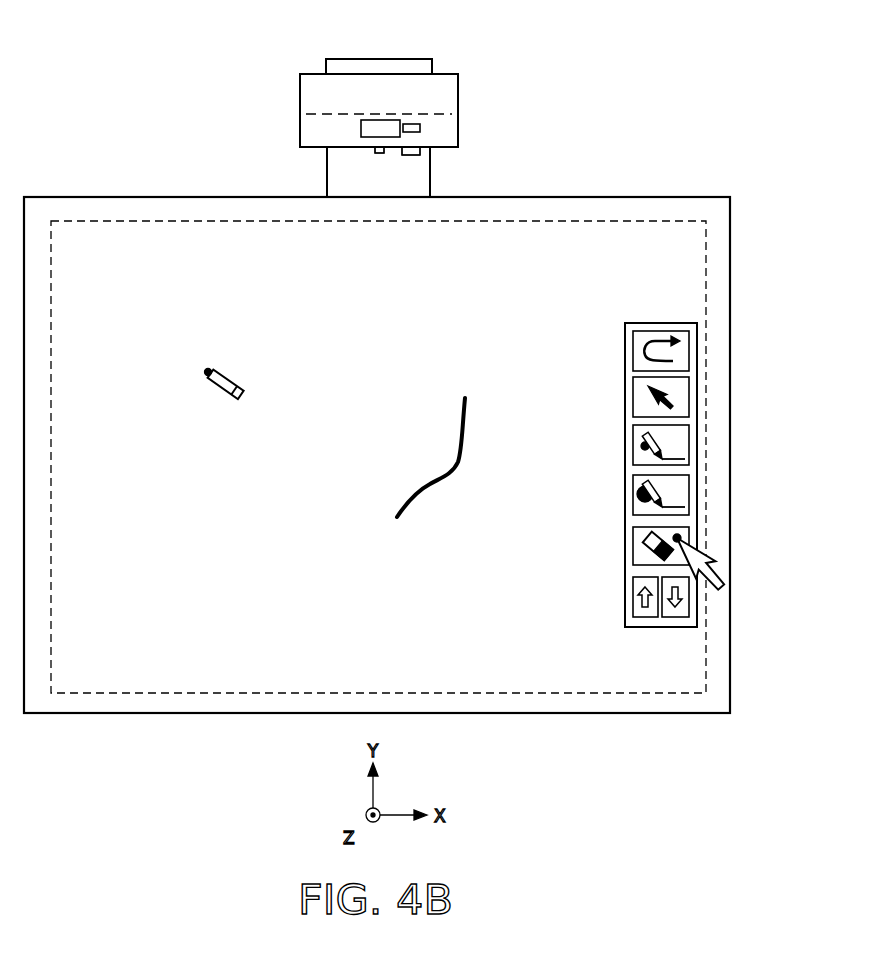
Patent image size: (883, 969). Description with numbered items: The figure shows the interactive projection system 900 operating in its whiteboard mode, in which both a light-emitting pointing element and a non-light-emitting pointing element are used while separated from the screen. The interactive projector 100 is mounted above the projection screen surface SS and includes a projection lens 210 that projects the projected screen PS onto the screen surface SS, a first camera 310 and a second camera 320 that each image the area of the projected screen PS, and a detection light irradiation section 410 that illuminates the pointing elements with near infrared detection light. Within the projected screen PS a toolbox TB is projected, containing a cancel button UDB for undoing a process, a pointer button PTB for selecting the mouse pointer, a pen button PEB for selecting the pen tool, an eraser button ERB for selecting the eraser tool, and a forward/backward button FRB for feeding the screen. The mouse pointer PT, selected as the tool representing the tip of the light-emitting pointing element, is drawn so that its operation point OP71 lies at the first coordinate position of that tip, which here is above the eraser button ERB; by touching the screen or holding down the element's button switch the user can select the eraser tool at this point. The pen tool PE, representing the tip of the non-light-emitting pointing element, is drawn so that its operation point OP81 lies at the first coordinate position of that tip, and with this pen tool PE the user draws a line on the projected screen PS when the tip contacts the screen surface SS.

The interactive projector 100 is at (458, 93).
The projection lens 210 is at (361, 130).
The first camera 310 is at (420, 128).
The second camera 320 is at (430, 152).
The detection light irradiation section 410 is at (357, 150).
The interactive projection system 900 is at (703, 92).
The projection screen surface SS is at (90, 203).
The projected screen PS is at (173, 222).
The toolbox TB is at (642, 323).
The cancel button UDB is at (633, 348).
The pointer button PTB is at (633, 392).
The pen button PEB is at (633, 445).
The eraser button ERB is at (633, 537).
The forward/backward button FRB is at (665, 586).
The pen tool PE is at (238, 382).
The mouse pointer PT is at (727, 578).
The operation point of the pen tool OP81 is at (208, 372).
The operation point of the mouse pointer OP71 is at (678, 537).